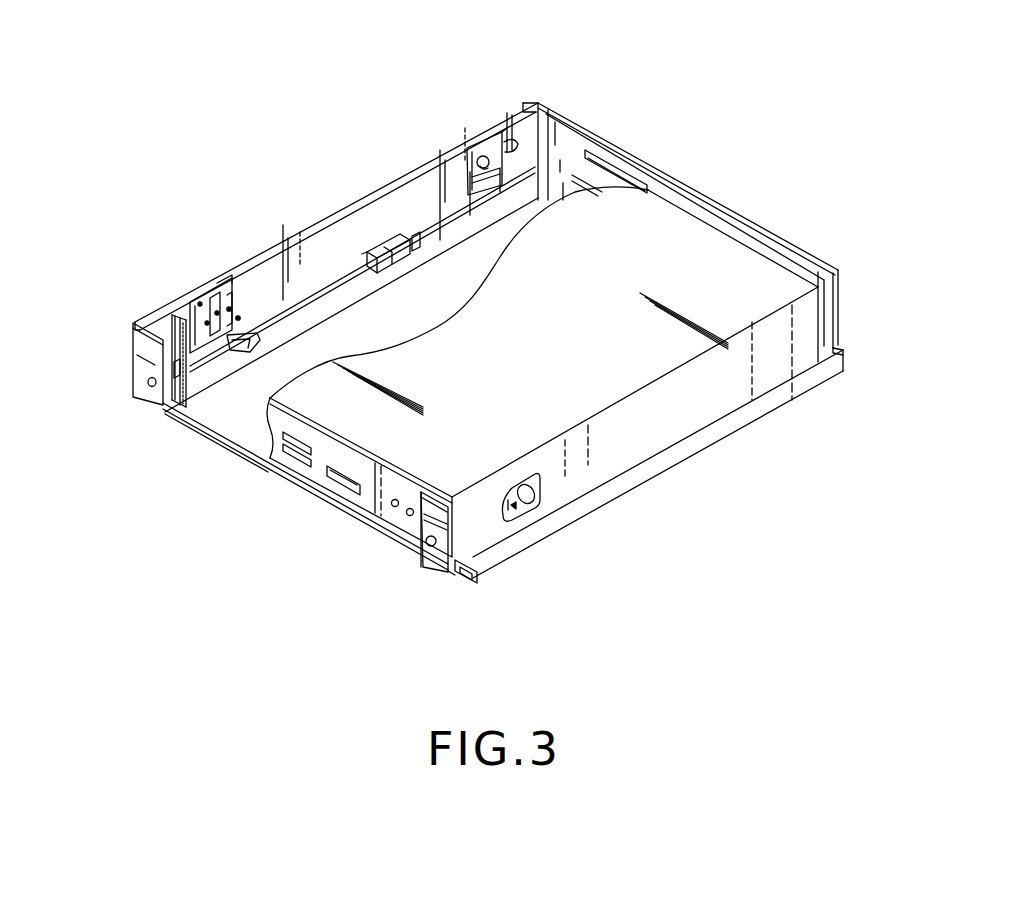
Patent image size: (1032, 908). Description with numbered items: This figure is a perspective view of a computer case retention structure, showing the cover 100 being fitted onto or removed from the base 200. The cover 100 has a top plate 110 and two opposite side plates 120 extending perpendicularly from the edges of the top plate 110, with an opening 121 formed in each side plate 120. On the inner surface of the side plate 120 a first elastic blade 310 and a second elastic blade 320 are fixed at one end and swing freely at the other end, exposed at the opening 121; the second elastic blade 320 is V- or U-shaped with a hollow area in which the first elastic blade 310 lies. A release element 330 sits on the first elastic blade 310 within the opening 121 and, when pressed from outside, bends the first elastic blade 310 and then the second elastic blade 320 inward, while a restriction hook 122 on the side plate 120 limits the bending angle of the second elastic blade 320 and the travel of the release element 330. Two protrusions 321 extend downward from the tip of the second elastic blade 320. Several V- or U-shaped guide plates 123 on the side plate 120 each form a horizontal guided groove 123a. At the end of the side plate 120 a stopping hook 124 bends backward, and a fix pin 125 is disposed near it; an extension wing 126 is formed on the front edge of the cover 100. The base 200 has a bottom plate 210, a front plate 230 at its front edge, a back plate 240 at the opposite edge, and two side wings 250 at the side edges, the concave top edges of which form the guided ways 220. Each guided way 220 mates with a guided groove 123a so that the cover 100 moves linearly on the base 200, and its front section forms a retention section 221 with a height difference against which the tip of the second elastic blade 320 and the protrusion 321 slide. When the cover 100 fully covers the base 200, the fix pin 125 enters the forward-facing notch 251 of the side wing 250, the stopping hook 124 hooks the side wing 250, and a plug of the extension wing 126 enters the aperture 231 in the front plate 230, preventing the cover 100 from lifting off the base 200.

The cover 100 is at (742, 237).
The top plate 110 is at (753, 283).
The side plate 120 is at (797, 337).
The opening 121 is at (542, 490).
The restriction hook 122 is at (240, 313).
The guide plate 123 is at (412, 236).
The guided groove 123a is at (366, 270).
The stopping hook 124 is at (466, 148).
The fix pin 125 is at (486, 157).
The extension wing 126 is at (140, 368).
The base 200 is at (700, 452).
The bottom plate 210 is at (247, 442).
The guided way 220 is at (333, 275).
The retention section 221 is at (270, 305).
The front plate 230 is at (368, 502).
The aperture 231 is at (178, 368).
The back plate 240 is at (678, 198).
The side wing 250 is at (537, 110).
The notch 251 is at (512, 140).
The first elastic blade 310 is at (217, 283).
The second elastic blade 320 is at (233, 300).
The protrusion 321 is at (235, 350).
The release element 330 is at (523, 503).